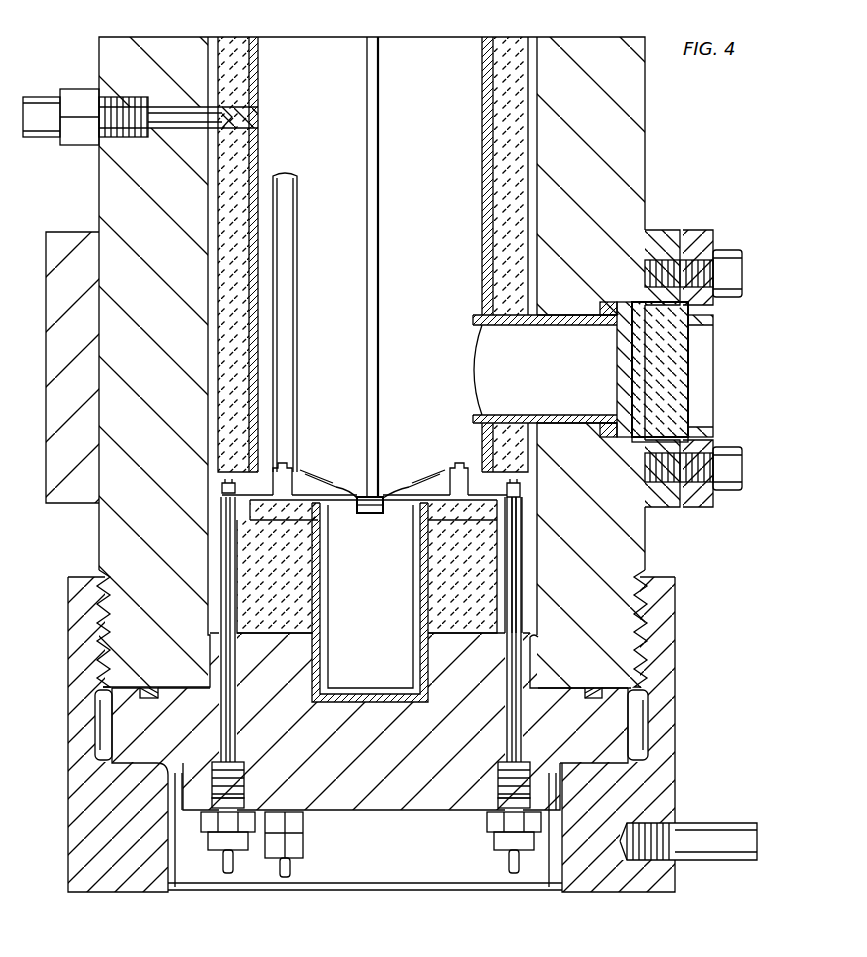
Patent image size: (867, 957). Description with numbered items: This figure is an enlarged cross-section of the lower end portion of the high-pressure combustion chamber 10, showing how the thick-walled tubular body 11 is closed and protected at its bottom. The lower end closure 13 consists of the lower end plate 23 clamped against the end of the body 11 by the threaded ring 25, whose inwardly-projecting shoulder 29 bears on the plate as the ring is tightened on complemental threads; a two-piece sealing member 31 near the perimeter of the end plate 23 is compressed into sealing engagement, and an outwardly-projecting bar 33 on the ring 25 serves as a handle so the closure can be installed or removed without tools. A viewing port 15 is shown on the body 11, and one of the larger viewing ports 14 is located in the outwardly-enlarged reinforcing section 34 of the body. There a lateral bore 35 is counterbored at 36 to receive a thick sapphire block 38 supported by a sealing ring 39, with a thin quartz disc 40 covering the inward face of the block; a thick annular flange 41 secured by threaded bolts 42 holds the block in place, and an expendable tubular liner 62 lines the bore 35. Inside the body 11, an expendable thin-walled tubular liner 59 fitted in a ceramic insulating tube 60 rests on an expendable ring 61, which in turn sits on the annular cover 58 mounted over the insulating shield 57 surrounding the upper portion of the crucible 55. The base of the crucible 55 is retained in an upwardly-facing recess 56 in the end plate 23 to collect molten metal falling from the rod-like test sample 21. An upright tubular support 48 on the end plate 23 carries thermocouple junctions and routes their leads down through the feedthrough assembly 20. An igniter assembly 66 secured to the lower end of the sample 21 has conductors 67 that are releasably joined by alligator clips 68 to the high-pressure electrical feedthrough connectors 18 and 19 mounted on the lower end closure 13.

The combustion chamber 10 is at (62, 540).
The thick-walled tubular body 11 is at (632, 106).
The lower end closure 13 is at (710, 636).
The viewing port 14 is at (712, 210).
The viewing port 15 is at (86, 76).
The electrical feedthrough connector 18 is at (492, 840).
The electrical feedthrough connector 19 is at (213, 860).
The feedthrough assembly 20 is at (297, 845).
The test sample 21 is at (379, 176).
The lower end plate 23 is at (386, 800).
The threaded ring 25 is at (670, 708).
The inwardly-projecting shoulder 29 is at (100, 680).
The sealing member 31 is at (148, 688).
The outwardly-projecting bar 33 is at (717, 832).
The reinforcing section 34 is at (70, 240).
The lateral bore 35 is at (563, 300).
The counterbore 36 is at (636, 440).
The transparent block 38 is at (673, 352).
The sealing ring 39 is at (612, 428).
The quartz disc 40 is at (618, 376).
The annular flange 41 is at (700, 506).
The threaded bolt 42 is at (728, 450).
The tubular support 48 is at (292, 323).
The crucible 55 is at (318, 612).
The recess 56 is at (430, 668).
The insulating shield 57 is at (482, 584).
The annular cover 58 is at (448, 518).
The tubular liner 59 is at (256, 62).
The insulating tube 60 is at (240, 150).
The expendable ring 61 is at (522, 512).
The tubular liner 62 is at (470, 320).
The igniter assembly 66 is at (378, 492).
The electrical conductor 67 is at (341, 477).
The alligator clip 68 is at (284, 468).